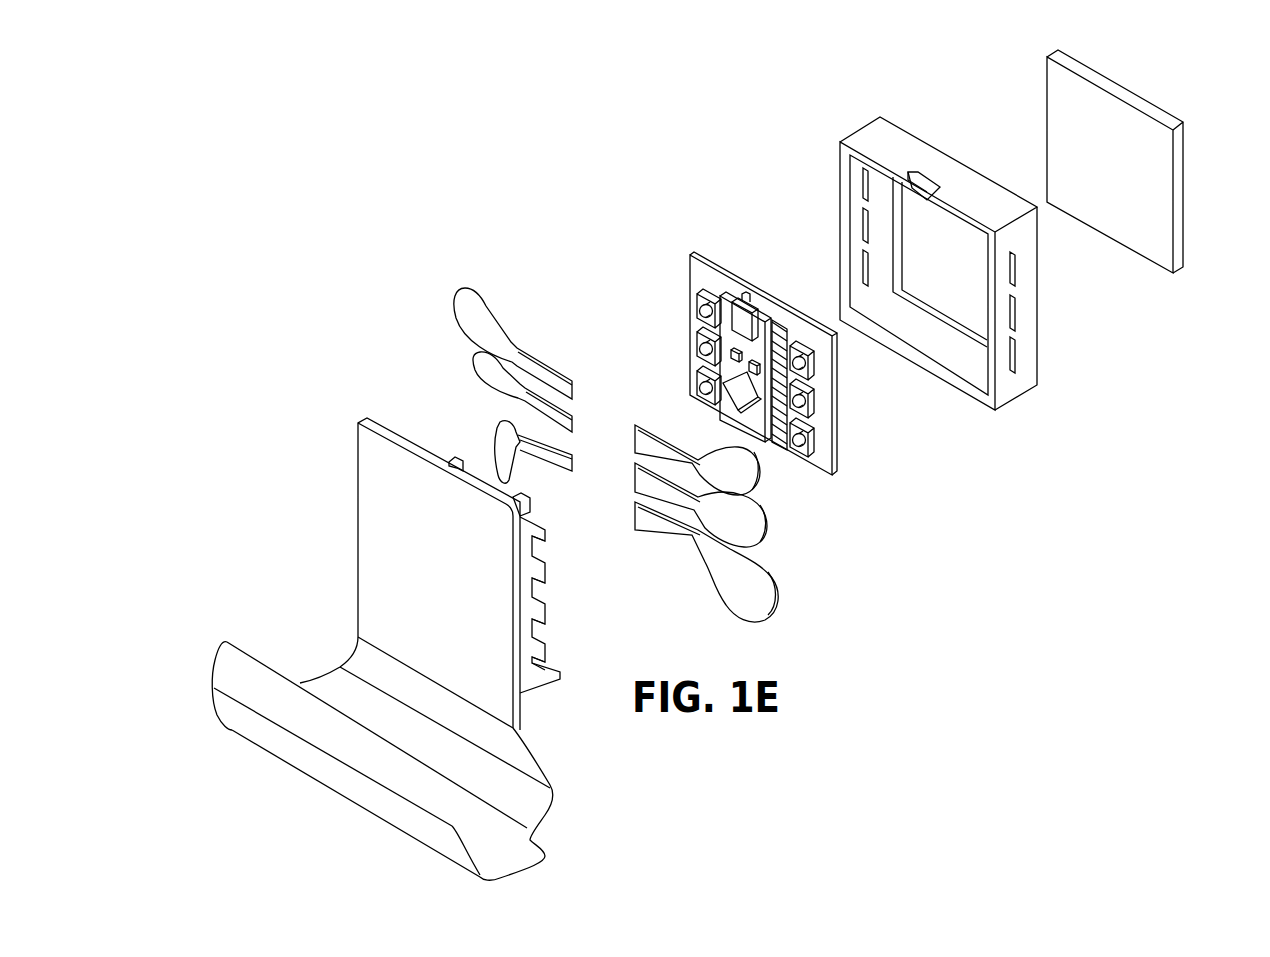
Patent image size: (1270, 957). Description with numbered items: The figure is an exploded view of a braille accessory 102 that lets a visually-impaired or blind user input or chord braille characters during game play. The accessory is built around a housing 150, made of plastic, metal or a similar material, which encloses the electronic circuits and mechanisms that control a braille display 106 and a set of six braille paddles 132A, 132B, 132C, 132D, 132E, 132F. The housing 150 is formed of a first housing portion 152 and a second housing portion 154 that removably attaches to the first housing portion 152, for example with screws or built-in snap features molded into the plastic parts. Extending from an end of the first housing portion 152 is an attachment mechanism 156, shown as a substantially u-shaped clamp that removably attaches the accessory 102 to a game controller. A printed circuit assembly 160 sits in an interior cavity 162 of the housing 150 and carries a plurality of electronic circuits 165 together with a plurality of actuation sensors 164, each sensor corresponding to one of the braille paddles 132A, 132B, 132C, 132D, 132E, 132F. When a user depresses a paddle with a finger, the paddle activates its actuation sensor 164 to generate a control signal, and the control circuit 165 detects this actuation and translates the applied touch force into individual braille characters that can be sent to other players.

The braille accessory 102 is at (612, 161).
The braille display 106 is at (1185, 195).
The braille paddle 132A is at (760, 482).
The braille paddle 132B is at (766, 532).
The braille paddle 132C is at (776, 599).
The braille paddle 132D is at (452, 315).
The braille paddle 132E is at (474, 380).
The braille paddle 132F is at (500, 432).
The housing 150 is at (358, 472).
The first housing portion 152 is at (384, 523).
The second housing portion 154 is at (1028, 323).
The attachment mechanism 156 is at (328, 794).
The printed circuit assembly 160 is at (838, 403).
The interior cavity 162 is at (856, 247).
The actuation sensors 164 is at (692, 311).
The electronic circuits 165 is at (738, 434).